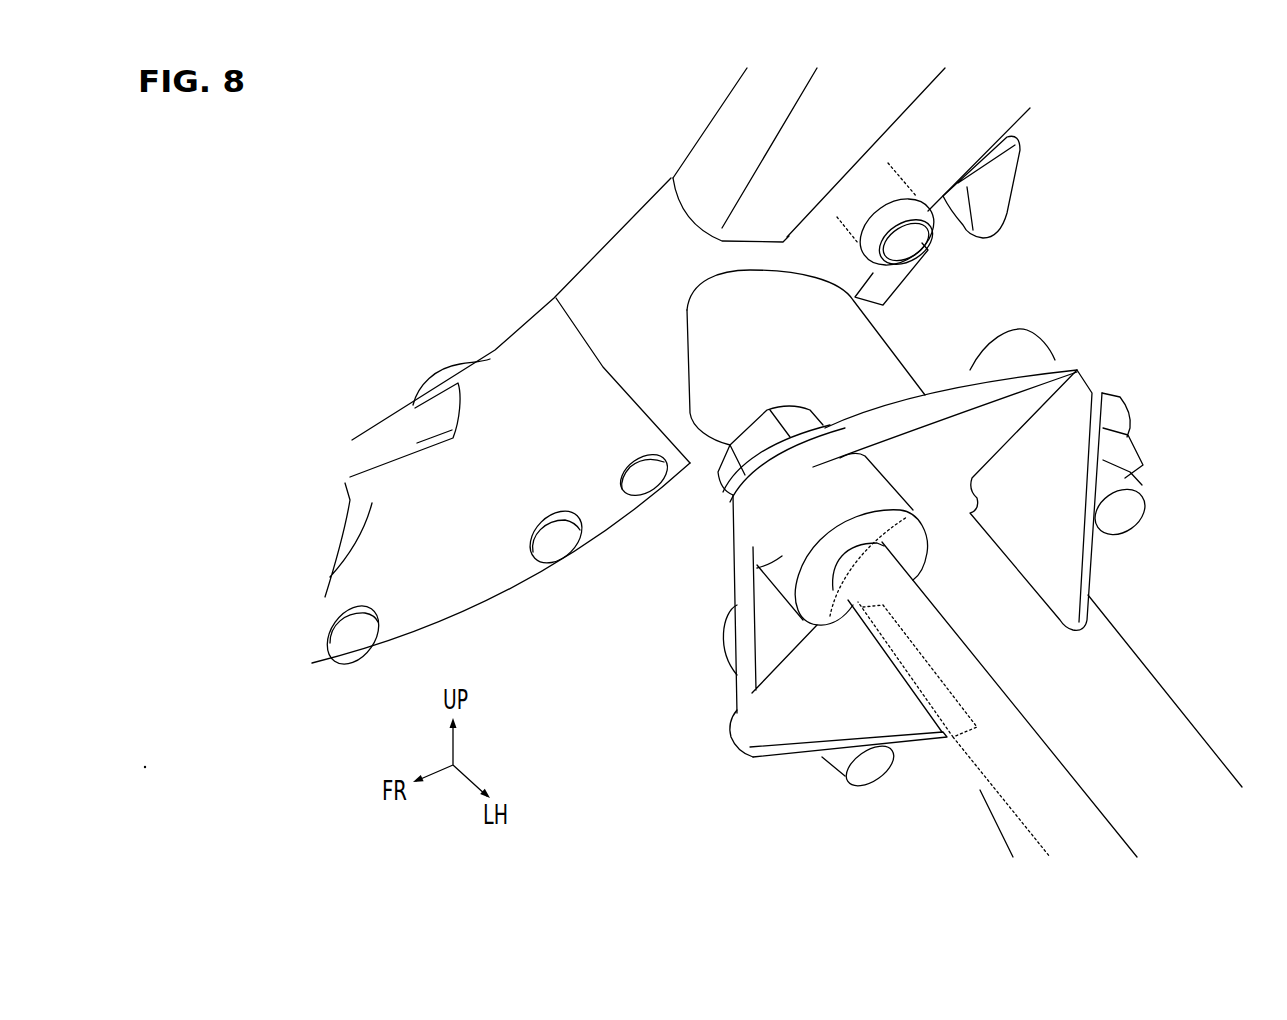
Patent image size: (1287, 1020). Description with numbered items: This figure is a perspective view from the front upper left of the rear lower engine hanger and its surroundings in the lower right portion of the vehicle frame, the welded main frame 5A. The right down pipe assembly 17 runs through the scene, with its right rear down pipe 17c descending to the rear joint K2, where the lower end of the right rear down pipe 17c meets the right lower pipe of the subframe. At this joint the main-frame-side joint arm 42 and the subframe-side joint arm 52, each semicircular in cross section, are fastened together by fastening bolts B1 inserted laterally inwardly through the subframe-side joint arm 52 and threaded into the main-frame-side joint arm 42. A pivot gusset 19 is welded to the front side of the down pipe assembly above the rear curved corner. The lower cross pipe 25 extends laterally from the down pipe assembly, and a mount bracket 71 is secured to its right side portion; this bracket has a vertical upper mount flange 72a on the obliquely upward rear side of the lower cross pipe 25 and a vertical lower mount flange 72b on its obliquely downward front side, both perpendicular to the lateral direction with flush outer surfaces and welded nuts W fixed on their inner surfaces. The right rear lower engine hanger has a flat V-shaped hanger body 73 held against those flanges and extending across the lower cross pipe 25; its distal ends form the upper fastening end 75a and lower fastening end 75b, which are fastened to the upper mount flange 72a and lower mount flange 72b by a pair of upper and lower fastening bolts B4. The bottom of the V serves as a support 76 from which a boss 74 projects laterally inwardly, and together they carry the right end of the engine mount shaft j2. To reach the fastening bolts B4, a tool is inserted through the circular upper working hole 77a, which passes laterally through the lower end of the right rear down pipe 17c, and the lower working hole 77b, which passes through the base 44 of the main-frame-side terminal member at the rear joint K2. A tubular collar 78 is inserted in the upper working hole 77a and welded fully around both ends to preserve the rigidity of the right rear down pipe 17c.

The pivot gusset 19 is at (737, 125).
The right rear down pipe 17c is at (667, 200).
The right down pipe assembly 17 is at (637, 210).
The main frame 5A is at (593, 227).
The rear joint K2 is at (397, 352).
The base 44 is at (537, 333).
The subframe-side joint arm 52 is at (377, 447).
The main-frame-side joint arm 42 is at (446, 603).
The fastening bolt B1 is at (549, 553).
The lower working hole 77b is at (640, 497).
The tubular collar 78 is at (893, 183).
The upper working hole 77a is at (902, 218).
The hanger body 73 is at (728, 588).
The support 76 is at (740, 532).
The boss 74 is at (757, 570).
The fastening bolt B4 is at (1027, 343).
The upper mount flange 72a is at (1093, 383).
The upper fastening end 75a is at (1060, 367).
The welded nut W is at (1122, 447).
The lower fastening end 75b is at (747, 690).
The lower mount flange 72b is at (730, 713).
The mount bracket 71 is at (740, 752).
The lower cross pipe 25 is at (1147, 697).
The engine mount shaft j2 is at (1068, 798).